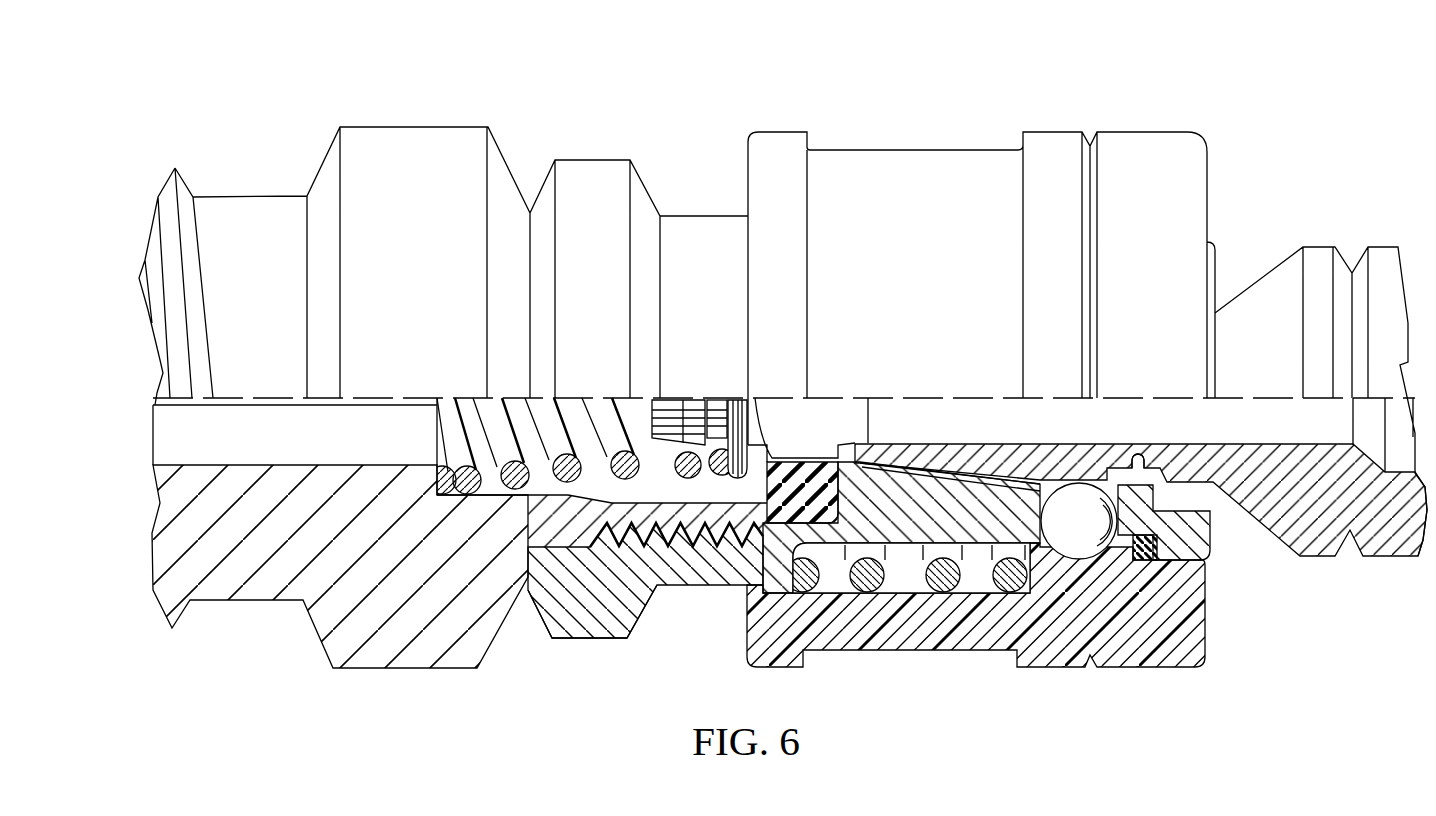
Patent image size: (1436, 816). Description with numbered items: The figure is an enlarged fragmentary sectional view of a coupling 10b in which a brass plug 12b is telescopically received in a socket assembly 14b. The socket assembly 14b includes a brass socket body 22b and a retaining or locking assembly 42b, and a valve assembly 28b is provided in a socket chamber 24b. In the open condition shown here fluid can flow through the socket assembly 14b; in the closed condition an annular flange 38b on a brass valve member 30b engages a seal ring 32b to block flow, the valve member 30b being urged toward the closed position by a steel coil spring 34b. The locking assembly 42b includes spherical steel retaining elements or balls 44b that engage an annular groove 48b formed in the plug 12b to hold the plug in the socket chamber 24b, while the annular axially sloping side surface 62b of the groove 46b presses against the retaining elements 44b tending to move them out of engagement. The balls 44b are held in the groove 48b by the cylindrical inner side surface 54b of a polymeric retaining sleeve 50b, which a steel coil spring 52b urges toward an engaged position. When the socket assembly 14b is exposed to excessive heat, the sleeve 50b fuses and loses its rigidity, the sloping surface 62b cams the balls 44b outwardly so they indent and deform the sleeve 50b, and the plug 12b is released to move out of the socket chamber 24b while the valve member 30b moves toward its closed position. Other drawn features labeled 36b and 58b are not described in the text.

The coupling 10b is at (1148, 97).
The brass plug 12b is at (1337, 240).
The socket assembly 14b is at (425, 100).
The brass socket body 22b is at (447, 617).
The socket chamber 24b is at (922, 443).
The valve assembly 28b is at (722, 397).
The brass valve member 30b is at (693, 401).
The seal ring 32b is at (737, 470).
The steel coil spring 34b is at (465, 443).
The chamber 36b is at (836, 417).
The annular flange 38b is at (687, 580).
The locking assembly 42b is at (963, 675).
The spherical metal retaining elements 44b is at (1088, 532).
The groove 46b is at (1048, 547).
The annular groove 48b is at (1147, 453).
The retaining sleeve 50b is at (1183, 165).
The steel coil spring 52b is at (875, 590).
The cylindrical inner side surface 54b is at (1133, 558).
The retainer 58b is at (1197, 593).
The annular axially sloping side surface 62b is at (1105, 472).